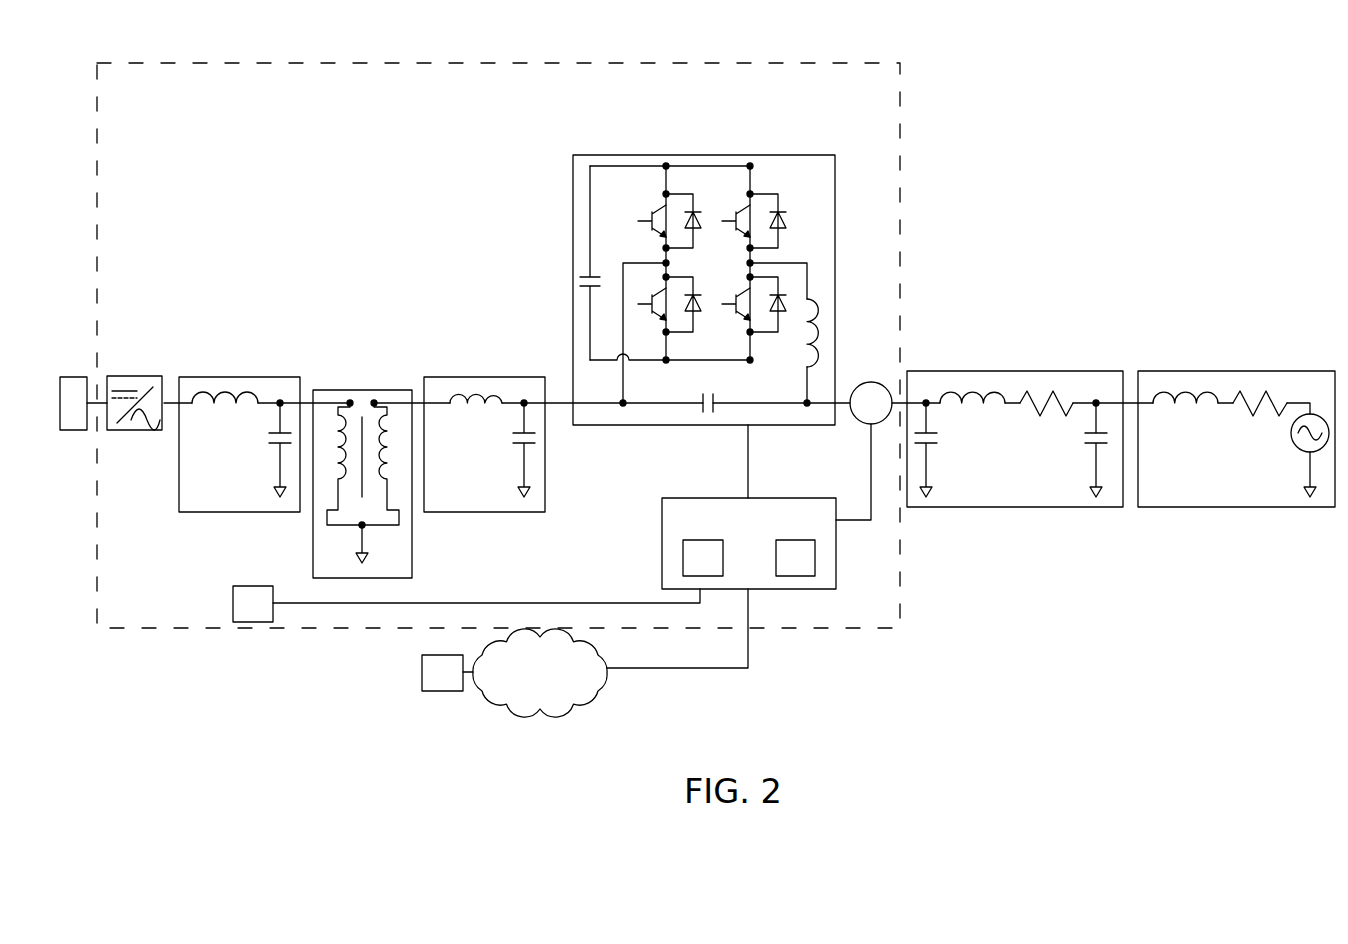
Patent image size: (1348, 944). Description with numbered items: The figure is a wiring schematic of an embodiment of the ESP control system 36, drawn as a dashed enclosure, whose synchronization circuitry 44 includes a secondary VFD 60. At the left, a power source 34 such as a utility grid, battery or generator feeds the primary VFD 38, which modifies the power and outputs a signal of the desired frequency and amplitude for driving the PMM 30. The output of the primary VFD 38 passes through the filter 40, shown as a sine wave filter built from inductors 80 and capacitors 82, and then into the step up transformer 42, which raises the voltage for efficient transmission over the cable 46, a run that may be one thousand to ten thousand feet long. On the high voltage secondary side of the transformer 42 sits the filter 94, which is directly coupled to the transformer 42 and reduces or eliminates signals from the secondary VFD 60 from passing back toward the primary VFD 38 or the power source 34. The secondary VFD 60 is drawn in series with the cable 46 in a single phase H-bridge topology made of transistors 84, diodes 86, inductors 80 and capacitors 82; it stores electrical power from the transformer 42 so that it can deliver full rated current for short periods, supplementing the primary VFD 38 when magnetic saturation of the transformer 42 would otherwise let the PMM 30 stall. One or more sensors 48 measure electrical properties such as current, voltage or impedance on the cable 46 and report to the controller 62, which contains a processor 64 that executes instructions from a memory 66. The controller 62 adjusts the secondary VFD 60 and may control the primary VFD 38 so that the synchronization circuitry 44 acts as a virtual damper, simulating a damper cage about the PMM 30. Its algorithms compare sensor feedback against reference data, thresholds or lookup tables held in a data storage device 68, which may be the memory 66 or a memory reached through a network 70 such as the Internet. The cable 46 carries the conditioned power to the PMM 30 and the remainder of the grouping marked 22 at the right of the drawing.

The power grid 22 is at (1335, 538).
The PMM 30 is at (1241, 371).
The power source 34 is at (74, 377).
The ESP control system 36 is at (753, 63).
The primary VFD 38 is at (136, 376).
The filter 40 is at (239, 377).
The step up transformer 42 is at (362, 390).
The synchronization circuitry 44 is at (835, 137).
The cable 46 is at (1015, 371).
The sensors 48 is at (871, 382).
The secondary VFD 60 is at (573, 215).
The controller 62 is at (791, 498).
The processor 64 is at (683, 557).
The memory 66 is at (795, 576).
The data storage device 68 is at (233, 603).
The network 70 is at (600, 689).
The inductors 80 is at (225, 410).
The capacitors 82 is at (268, 446).
The transistors 84 is at (646, 222).
The diodes 86 is at (784, 214).
The filter 94 is at (484, 377).